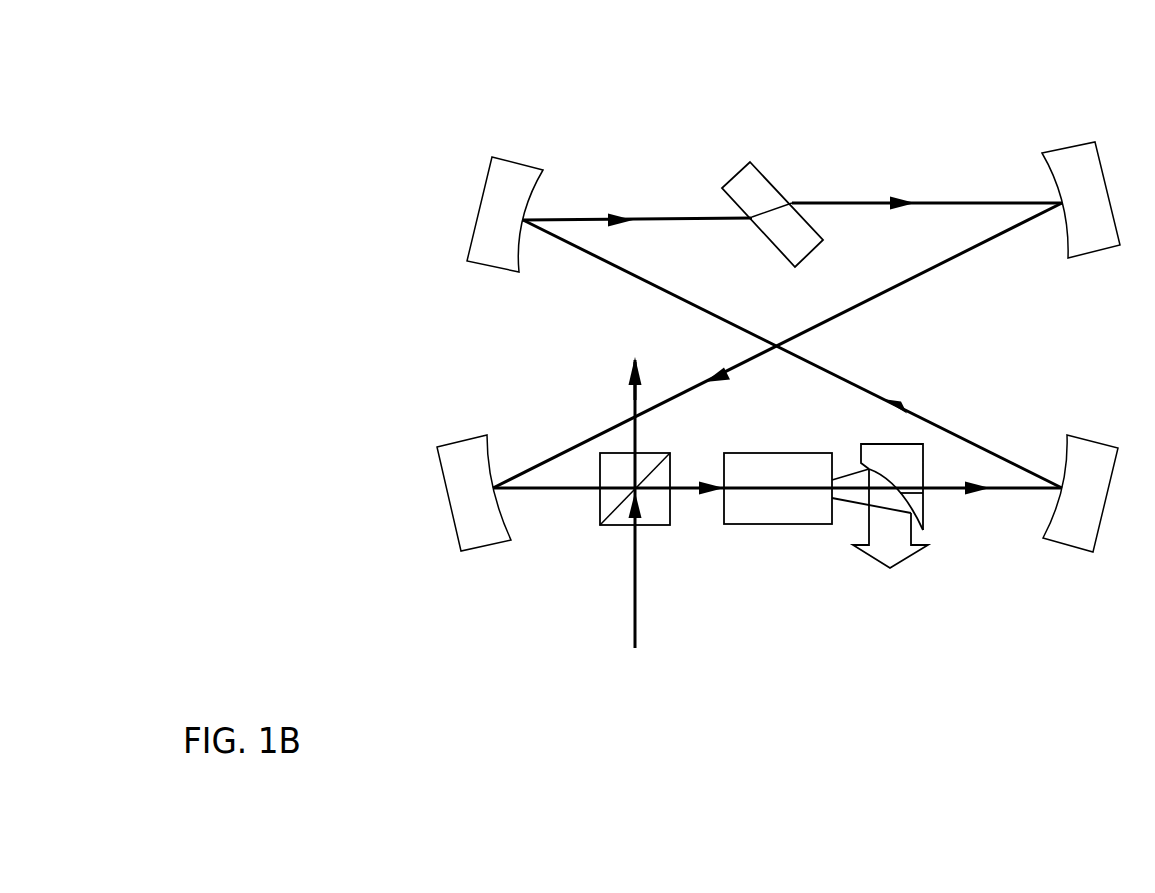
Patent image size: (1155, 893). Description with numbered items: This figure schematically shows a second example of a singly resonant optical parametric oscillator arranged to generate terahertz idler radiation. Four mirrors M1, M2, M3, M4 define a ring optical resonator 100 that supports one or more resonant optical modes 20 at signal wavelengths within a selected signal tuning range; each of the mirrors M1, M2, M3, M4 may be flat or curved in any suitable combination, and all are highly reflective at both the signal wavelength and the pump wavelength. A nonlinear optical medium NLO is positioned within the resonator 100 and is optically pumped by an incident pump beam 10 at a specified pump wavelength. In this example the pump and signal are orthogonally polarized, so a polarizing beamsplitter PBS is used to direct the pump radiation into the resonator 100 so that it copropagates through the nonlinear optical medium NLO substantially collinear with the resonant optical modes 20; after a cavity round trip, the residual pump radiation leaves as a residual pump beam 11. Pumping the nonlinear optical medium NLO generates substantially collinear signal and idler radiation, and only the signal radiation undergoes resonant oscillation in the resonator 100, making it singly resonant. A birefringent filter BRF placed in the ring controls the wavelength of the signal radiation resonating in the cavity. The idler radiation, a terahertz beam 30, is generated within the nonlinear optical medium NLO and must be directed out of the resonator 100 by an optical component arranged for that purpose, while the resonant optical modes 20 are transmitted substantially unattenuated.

The ring optical resonator 100 is at (866, 653).
The incident pump beam 10 is at (633, 570).
The residual pump beam 11 is at (632, 403).
The resonant optical modes 20 is at (967, 203).
The terahertz beam 30 is at (903, 555).
The mirror M1 is at (477, 527).
The mirror M2 is at (1080, 525).
The mirror M3 is at (510, 182).
The mirror M4 is at (1078, 167).
The birefringent filter BRF is at (752, 188).
The polarizing beamsplitter PBS is at (678, 528).
The nonlinear optical medium NLO is at (803, 502).